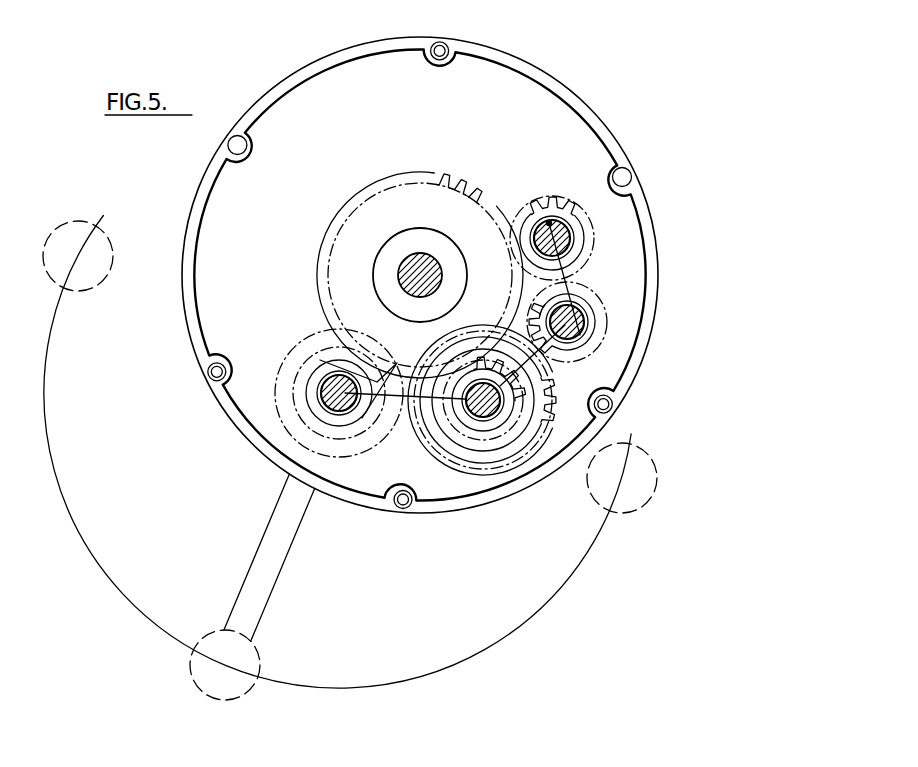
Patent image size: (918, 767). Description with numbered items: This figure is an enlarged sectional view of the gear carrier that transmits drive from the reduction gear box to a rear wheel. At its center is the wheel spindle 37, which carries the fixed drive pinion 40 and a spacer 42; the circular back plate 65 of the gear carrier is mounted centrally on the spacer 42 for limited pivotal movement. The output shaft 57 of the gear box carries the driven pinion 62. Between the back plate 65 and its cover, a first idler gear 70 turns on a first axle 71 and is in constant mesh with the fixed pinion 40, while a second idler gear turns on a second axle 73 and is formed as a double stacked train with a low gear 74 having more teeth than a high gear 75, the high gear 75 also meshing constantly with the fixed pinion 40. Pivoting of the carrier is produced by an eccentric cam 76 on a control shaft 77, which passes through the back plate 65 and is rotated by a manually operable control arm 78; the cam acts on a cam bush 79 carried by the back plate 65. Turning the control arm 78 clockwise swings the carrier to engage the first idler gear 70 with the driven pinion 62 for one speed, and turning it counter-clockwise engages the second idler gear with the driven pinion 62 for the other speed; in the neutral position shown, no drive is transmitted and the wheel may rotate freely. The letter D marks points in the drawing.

The circular back plate 65 is at (529, 88).
The fixed drive pinion 40 is at (428, 192).
The spacer 42 is at (435, 252).
The wheel spindle 37 is at (407, 267).
The first idler gear 70 is at (553, 205).
The first axle 71 is at (561, 244).
The driven pinion 62 is at (563, 291).
The output shaft 57 is at (581, 335).
The second axle 73 is at (481, 418).
The high gear 75 is at (516, 387).
The low gear 74 is at (543, 421).
The eccentric cam 76 is at (344, 423).
The cam bush 79 is at (396, 432).
The control shaft 77 is at (318, 402).
The control arm 78 is at (258, 601).
The center distance D is at (549, 223).